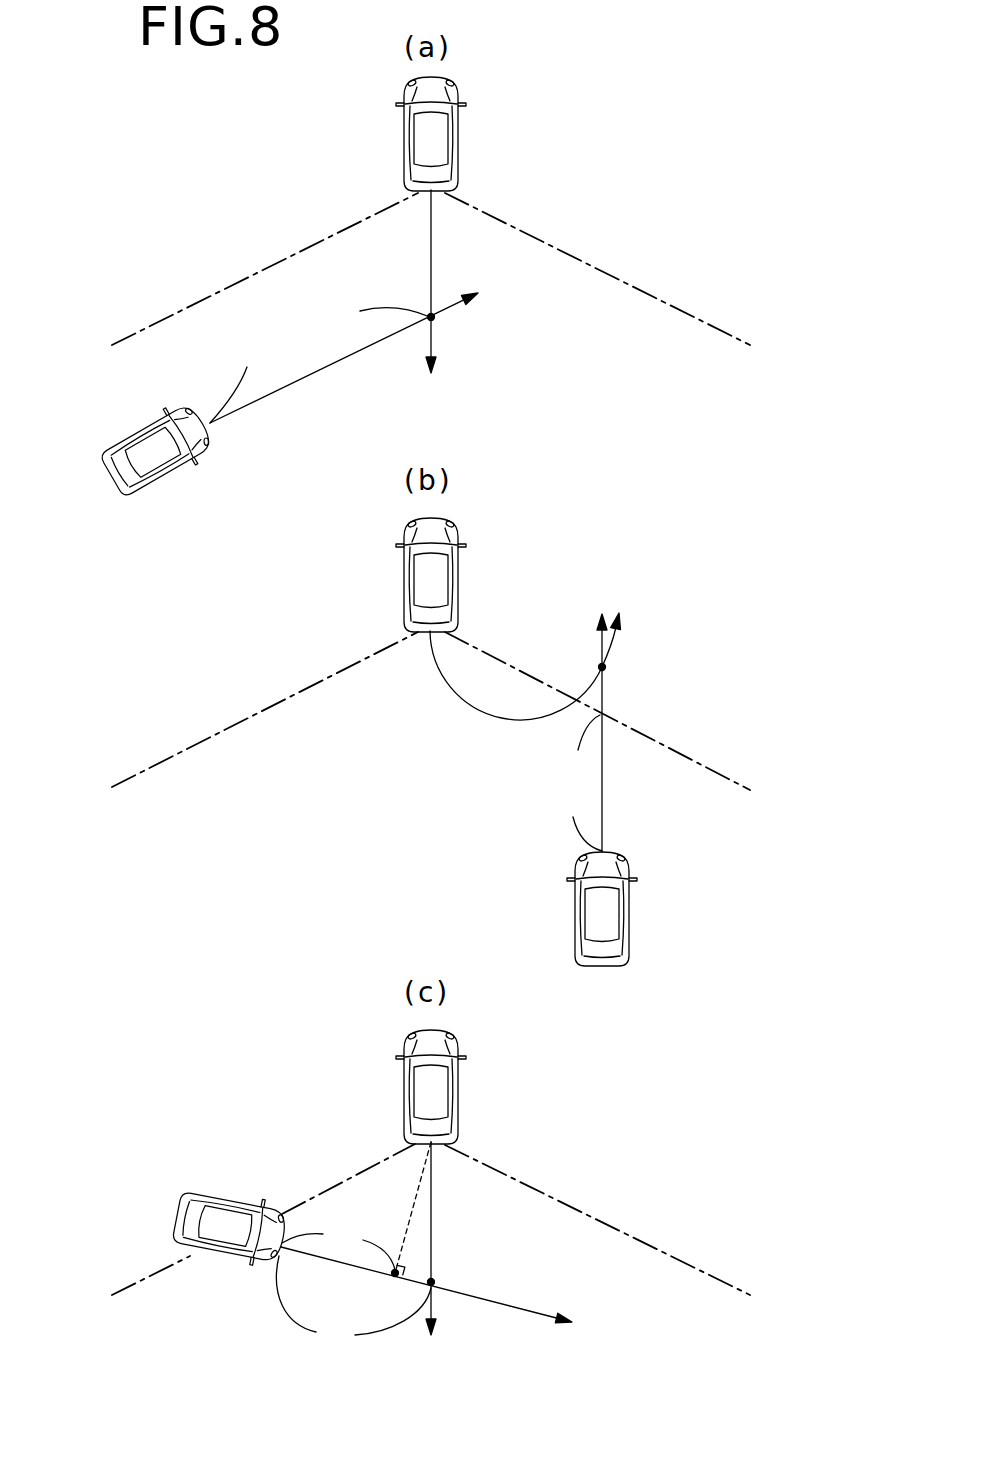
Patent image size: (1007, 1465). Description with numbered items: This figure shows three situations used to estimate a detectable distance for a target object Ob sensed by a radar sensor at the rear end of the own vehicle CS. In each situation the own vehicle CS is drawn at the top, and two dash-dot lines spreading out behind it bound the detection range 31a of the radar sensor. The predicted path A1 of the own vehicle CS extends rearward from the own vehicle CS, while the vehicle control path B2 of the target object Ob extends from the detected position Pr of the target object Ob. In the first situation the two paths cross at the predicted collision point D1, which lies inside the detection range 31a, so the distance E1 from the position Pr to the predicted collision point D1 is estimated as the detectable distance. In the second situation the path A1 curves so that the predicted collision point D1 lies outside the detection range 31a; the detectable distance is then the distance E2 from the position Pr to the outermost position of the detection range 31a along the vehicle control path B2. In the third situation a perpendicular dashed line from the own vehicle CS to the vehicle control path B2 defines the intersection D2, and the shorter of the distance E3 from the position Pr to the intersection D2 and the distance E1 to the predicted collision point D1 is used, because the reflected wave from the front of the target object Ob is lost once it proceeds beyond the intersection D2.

The own vehicle CS is at (404, 146).
The target object Ob is at (162, 480).
The detection range 31a is at (584, 263).
The path of the own vehicle A1 is at (433, 270).
The vehicle control path B2 is at (340, 374).
The predicted collision point D1 is at (434, 318).
The intersection D2 is at (392, 1277).
The position of the target object Pr is at (212, 428).
The distance to the predicted collision point E1 is at (320, 829).
The distance to the outermost position of the detection range E2 is at (581, 783).
The distance to the intersection E3 is at (338, 1248).